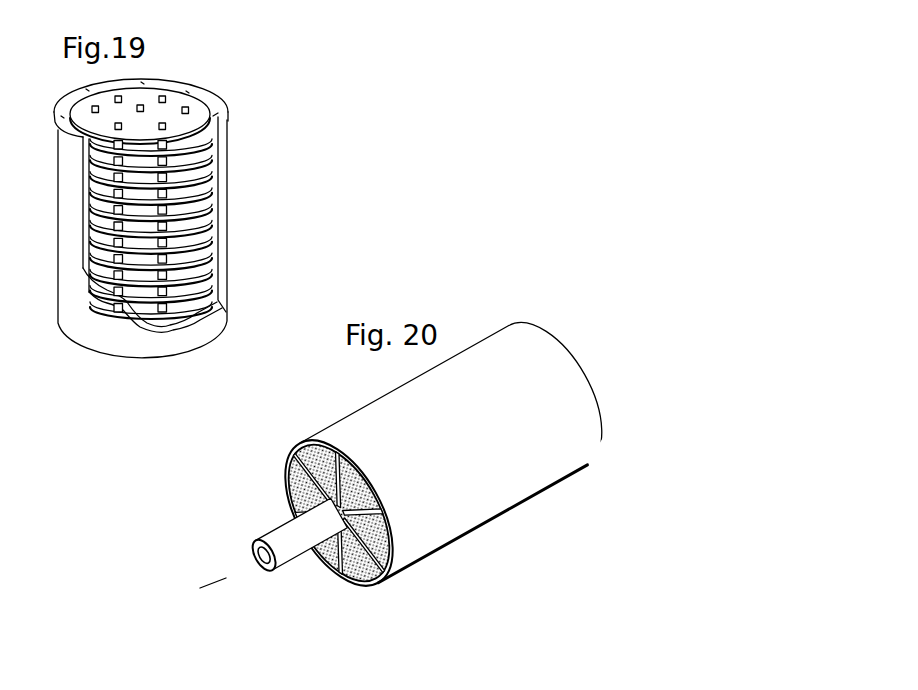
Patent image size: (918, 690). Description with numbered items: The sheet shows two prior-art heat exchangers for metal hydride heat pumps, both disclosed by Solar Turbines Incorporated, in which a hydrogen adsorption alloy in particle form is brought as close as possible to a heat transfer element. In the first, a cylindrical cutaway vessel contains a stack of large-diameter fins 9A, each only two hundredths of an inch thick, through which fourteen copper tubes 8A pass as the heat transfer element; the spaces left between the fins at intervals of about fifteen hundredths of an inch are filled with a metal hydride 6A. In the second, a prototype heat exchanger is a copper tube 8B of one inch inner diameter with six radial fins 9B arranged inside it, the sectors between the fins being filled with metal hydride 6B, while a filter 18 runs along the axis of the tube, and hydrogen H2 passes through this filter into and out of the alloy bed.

In FIG. 19, the metal hydride 6A is at (193, 240).
In FIG. 19, the copper tubes 8A is at (164, 129).
In FIG. 19, the fins 9A is at (192, 188).
In FIG. 20, the metal hydride 6B is at (302, 448).
In FIG. 20, the copper tube 8B is at (495, 520).
In FIG. 20, the radial fins 9B is at (374, 583).
In FIG. 20, the filter 18 is at (280, 530).
In FIG. 20, the hydrogen H2 is at (228, 573).